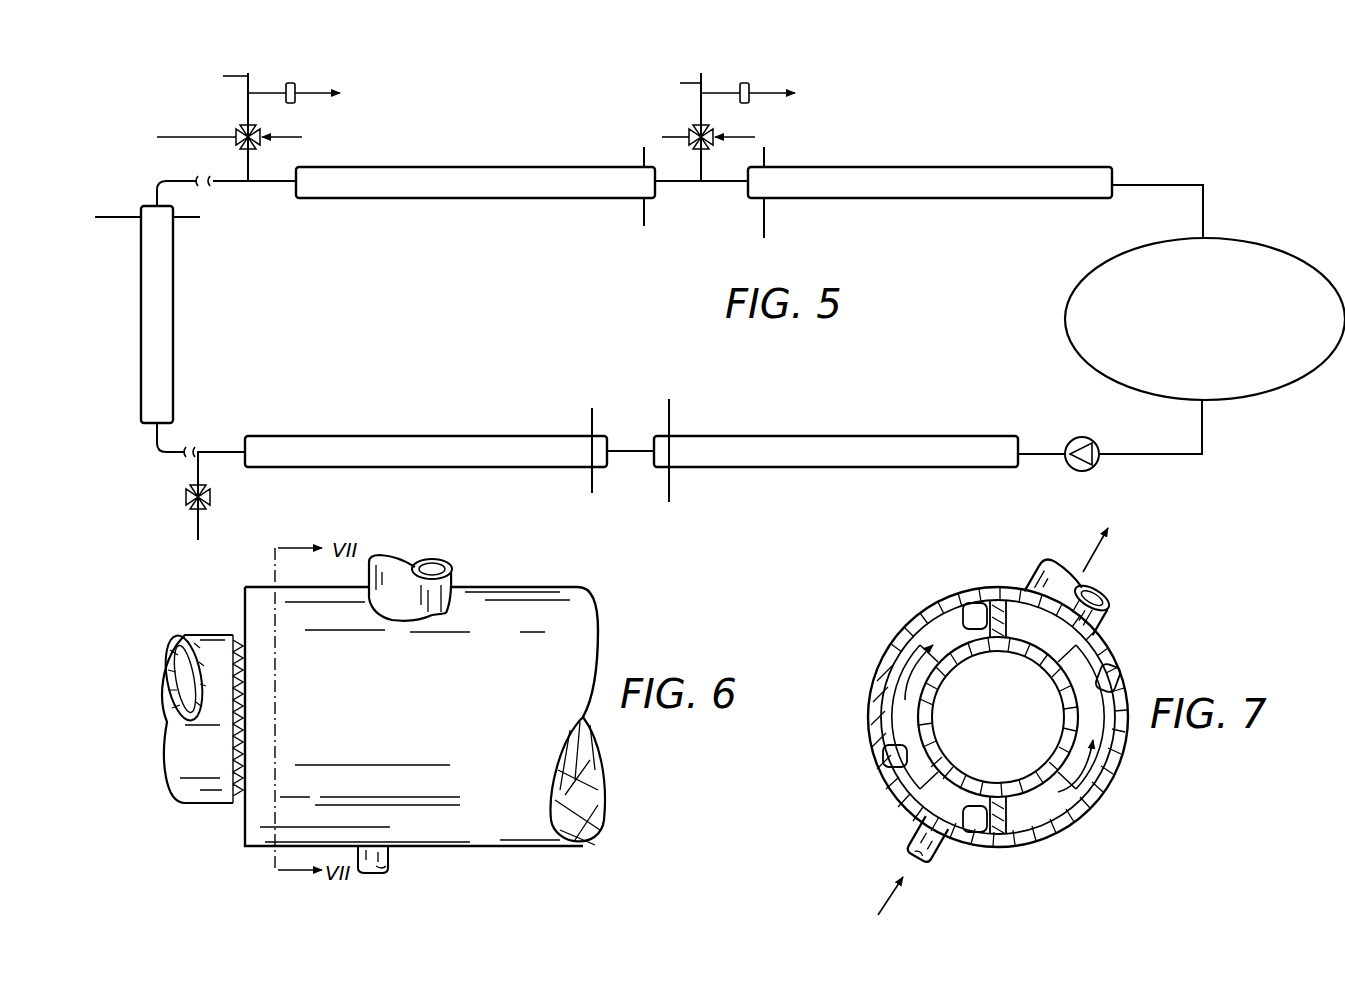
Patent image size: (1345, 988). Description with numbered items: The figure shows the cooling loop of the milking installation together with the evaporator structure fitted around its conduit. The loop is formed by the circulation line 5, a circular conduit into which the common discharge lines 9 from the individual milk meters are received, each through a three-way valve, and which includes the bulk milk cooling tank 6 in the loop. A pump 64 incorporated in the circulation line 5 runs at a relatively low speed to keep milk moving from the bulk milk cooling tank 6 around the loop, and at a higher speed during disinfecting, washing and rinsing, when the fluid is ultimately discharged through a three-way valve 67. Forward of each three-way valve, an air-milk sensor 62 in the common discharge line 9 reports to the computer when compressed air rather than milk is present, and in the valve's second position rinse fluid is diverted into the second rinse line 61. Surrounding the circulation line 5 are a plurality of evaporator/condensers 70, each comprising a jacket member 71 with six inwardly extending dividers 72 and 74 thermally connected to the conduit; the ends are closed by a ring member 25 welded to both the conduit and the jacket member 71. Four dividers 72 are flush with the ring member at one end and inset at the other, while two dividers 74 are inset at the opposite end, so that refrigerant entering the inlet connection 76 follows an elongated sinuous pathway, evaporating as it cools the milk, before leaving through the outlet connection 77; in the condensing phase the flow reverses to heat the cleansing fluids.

In FIG. 5, the circulation line 5 is at (273, 190).
In FIG. 6, the circulation line 5 is at (200, 635).
In FIG. 7, the circulation line 5 is at (1028, 660).
In FIG. 5, the bulk milk cooling tank 6 is at (1068, 312).
In FIG. 5, the common discharge line 9 is at (453, 78).
In FIG. 6, the threaded connection 25 is at (245, 826).
In FIG. 5, the second rinse line 61 is at (190, 127).
In FIG. 5, the air-milk sensor 62 is at (290, 66).
In FIG. 5, the pump 64 is at (1084, 437).
In FIG. 5, the three-way valve 67 is at (190, 506).
In FIG. 5, the evaporator/condenser 70 is at (168, 370).
In FIG. 7, the evaporator/condenser 70 is at (908, 630).
In FIG. 6, the jacket member 71 is at (572, 640).
In FIG. 6, the divider 72 is at (556, 788).
In FIG. 7, the divider 72 is at (975, 603).
In FIG. 7, the divider 74 is at (895, 688).
In FIG. 5, the inlet connection 76 is at (190, 220).
In FIG. 6, the inlet connection 76 is at (390, 862).
In FIG. 7, the inlet connection 76 is at (908, 840).
In FIG. 5, the outlet connection 77 is at (118, 217).
In FIG. 6, the outlet connection 77 is at (448, 576).
In FIG. 7, the outlet connection 77 is at (1108, 615).